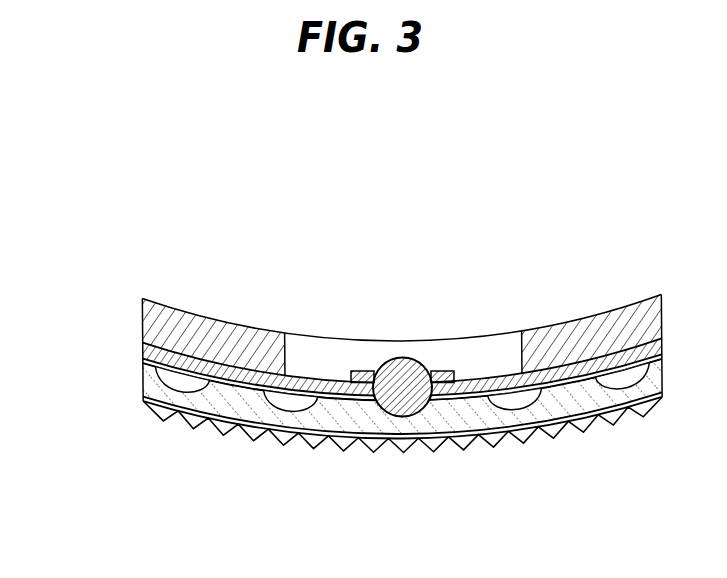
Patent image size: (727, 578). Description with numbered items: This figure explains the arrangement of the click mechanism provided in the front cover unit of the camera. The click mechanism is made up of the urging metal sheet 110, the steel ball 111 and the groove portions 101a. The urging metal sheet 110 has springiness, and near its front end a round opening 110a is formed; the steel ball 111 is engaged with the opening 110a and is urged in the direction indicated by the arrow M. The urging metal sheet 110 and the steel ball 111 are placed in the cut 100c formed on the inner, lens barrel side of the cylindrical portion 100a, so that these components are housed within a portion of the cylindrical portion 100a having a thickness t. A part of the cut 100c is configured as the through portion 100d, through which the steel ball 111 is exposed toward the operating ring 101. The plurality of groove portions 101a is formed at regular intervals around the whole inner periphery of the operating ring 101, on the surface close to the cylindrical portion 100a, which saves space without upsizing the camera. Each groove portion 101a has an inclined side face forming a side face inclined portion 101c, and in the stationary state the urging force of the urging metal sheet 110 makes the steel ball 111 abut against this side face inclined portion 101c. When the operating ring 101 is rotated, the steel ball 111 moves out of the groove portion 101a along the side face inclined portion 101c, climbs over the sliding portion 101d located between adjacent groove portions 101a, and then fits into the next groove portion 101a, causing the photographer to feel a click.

The cylindrical portion 100a is at (232, 340).
The cut 100c is at (493, 350).
The through portion 100d is at (428, 400).
The operating ring 101 is at (642, 393).
The groove portion 101a is at (293, 403).
The side face inclined portion 101c is at (440, 412).
The sliding portion 101d is at (332, 402).
The urging metal sheet 110 is at (443, 370).
The round opening 110a is at (428, 367).
The steel ball 111 is at (373, 408).
The arrow M is at (338, 362).
The thickness t is at (141, 352).